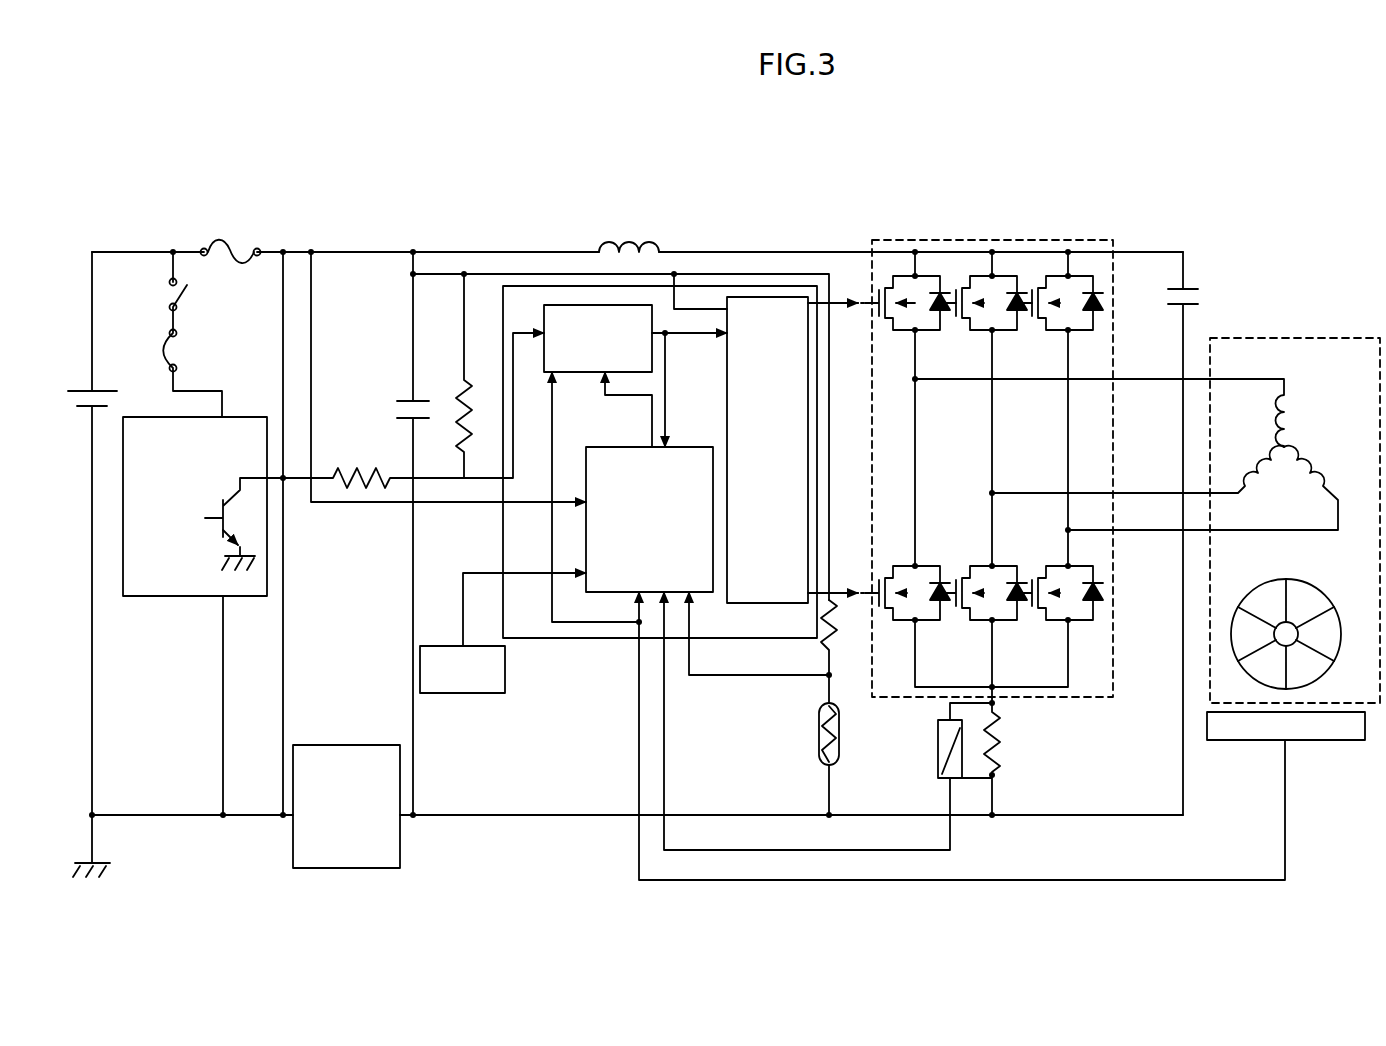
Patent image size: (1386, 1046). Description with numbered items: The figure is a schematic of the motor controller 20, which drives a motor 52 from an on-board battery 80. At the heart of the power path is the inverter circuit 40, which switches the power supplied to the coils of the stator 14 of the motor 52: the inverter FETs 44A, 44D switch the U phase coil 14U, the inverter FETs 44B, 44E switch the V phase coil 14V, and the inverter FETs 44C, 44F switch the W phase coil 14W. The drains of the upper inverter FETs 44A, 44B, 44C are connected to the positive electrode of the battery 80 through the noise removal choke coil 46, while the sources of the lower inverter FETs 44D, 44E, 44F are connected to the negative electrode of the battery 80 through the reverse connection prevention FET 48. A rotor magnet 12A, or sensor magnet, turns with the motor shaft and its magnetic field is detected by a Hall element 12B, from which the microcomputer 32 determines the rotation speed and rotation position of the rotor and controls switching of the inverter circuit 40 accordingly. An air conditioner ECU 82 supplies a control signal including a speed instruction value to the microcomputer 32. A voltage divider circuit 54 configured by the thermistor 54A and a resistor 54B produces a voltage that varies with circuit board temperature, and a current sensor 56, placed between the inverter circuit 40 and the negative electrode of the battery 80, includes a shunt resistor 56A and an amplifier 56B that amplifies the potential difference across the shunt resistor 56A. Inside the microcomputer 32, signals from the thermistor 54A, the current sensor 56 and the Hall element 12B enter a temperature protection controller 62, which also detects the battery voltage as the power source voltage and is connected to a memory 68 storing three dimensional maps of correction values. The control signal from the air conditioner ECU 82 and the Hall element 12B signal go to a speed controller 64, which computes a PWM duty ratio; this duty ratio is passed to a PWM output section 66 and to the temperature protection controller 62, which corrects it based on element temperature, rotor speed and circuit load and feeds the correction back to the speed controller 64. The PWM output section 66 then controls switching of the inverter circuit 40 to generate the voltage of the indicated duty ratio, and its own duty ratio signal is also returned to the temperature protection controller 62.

The motor controller 20 is at (1214, 162).
The on-board battery 80 is at (74, 388).
The air conditioner ECU 82 is at (243, 417).
The noise removal choke coil 46 is at (633, 236).
The speed controller 64 is at (568, 305).
The inverter circuit 40 is at (997, 240).
The motor 52 is at (1276, 338).
The stator 14 is at (1148, 435).
The U phase coil 14U is at (1291, 418).
The V phase coil 14V is at (1262, 466).
The W phase coil 14W is at (1323, 478).
The rotor magnet 12A is at (1312, 588).
The Hall element 12B is at (1310, 742).
The inverter FET 44A is at (944, 320).
The inverter FET 44B is at (1020, 320).
The inverter FET 44C is at (1100, 320).
The inverter FET 44D is at (944, 612).
The inverter FET 44E is at (1022, 612).
The inverter FET 44F is at (1100, 611).
The reverse connection prevention FET 48 is at (355, 745).
The memory 68 is at (470, 695).
The microcomputer 32 is at (585, 638).
The temperature protection controller 62 is at (614, 592).
The PWM output section 66 is at (782, 596).
The voltage divider circuit 54 is at (840, 707).
The thermistor 54A is at (843, 735).
The resistor 54B is at (836, 648).
The current sensor 56 is at (1038, 759).
The shunt resistor 56A is at (1005, 735).
The amplifier 56B is at (964, 762).